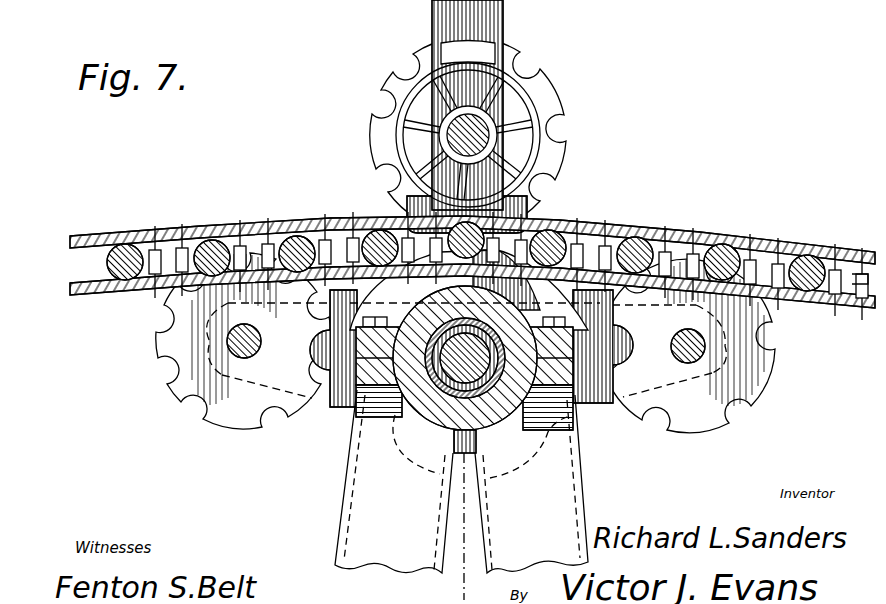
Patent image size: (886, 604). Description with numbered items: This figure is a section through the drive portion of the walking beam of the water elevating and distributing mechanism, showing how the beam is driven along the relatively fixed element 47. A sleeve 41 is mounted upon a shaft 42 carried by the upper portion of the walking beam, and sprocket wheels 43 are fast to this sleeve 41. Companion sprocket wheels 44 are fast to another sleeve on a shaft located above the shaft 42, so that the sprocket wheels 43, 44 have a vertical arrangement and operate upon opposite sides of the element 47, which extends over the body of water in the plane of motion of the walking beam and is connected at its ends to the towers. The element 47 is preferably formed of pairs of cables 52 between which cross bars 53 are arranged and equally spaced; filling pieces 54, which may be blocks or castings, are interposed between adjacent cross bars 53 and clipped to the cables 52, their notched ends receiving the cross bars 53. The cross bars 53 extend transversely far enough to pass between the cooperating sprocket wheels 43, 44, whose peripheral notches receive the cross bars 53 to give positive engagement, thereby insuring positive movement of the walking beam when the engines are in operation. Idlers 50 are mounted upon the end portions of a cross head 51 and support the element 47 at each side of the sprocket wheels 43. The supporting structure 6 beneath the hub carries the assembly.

The supporting leg 6 is at (356, 535).
The sleeve 41 is at (405, 405).
The shaft 42 is at (487, 380).
The sprocket wheels 43 is at (500, 250).
The companion sprocket wheels 44 is at (535, 82).
The element 47 is at (845, 248).
The idlers 50 is at (232, 420).
The cross head 51 is at (598, 405).
The cables 52 is at (93, 224).
The cross bars 53 is at (125, 256).
The filling pieces 54 is at (168, 252).